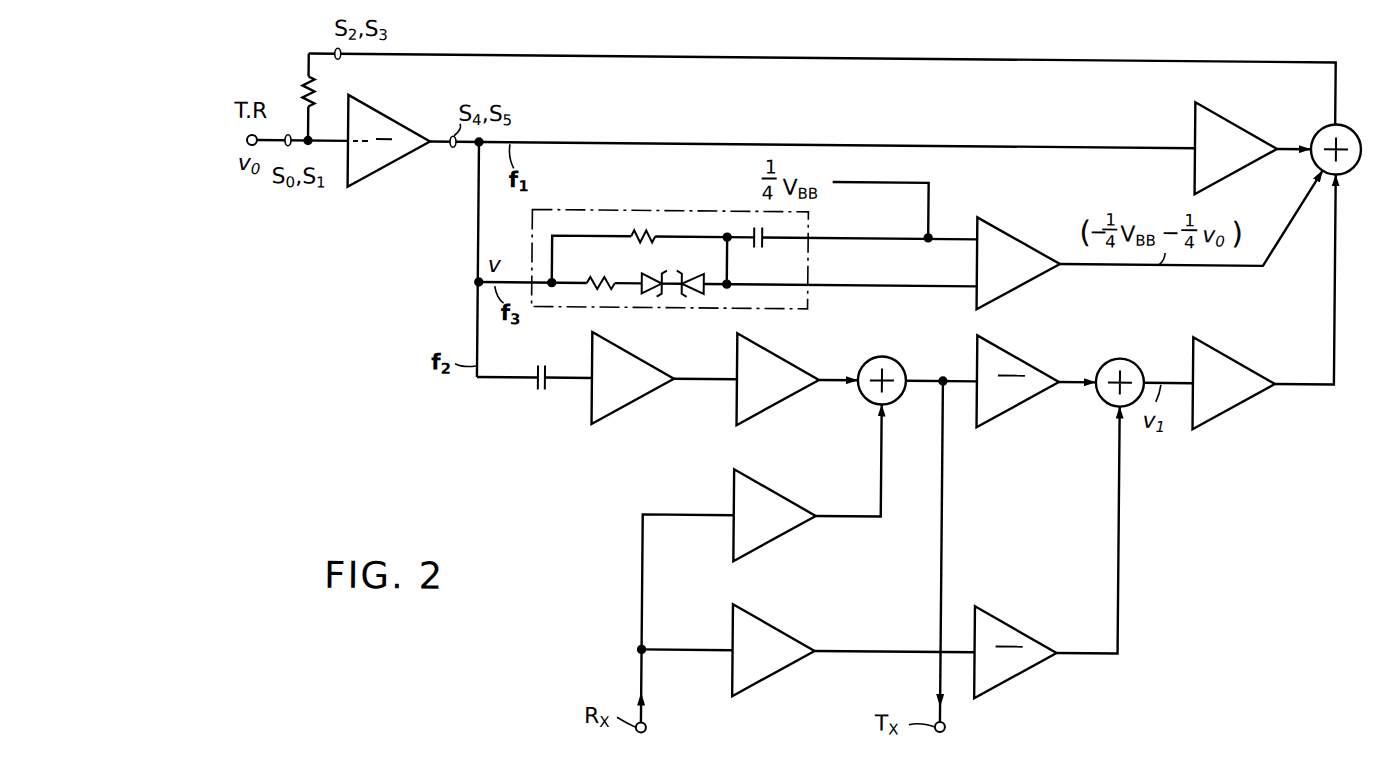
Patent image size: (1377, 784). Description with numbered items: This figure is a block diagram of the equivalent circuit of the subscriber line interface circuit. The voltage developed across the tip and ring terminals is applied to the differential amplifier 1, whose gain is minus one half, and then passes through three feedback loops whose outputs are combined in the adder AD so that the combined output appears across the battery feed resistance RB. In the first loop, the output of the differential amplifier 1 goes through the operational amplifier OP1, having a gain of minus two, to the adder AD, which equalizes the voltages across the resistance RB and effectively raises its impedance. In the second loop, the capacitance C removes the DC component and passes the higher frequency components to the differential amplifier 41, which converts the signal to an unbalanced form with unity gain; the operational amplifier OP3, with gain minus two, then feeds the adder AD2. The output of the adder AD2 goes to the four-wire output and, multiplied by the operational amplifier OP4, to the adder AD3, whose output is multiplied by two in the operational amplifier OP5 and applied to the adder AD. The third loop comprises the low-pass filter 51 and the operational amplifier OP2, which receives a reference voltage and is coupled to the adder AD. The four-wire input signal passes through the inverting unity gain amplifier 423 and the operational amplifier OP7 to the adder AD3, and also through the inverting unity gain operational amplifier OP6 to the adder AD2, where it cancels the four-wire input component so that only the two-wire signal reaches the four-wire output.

The differential amplifier 1 is at (387, 116).
The differential amplifier 41 is at (645, 356).
The low-pass filter 51 is at (623, 207).
The inverting unity gain amplifier 423 is at (778, 621).
The operational amplifier OP1 is at (1226, 114).
The operational amplifier OP2 is at (1000, 221).
The operational amplifier OP3 is at (777, 351).
The operational amplifier OP4 is at (1011, 350).
The operational amplifier OP5 is at (1222, 348).
The operational amplifier OP6 is at (774, 484).
The operational amplifier OP7 is at (1007, 615).
The adder AD is at (1349, 117).
The adder AD2 is at (876, 353).
The adder AD3 is at (1104, 352).
The battery feed resistance RB is at (290, 96).
The capacitance C is at (540, 389).